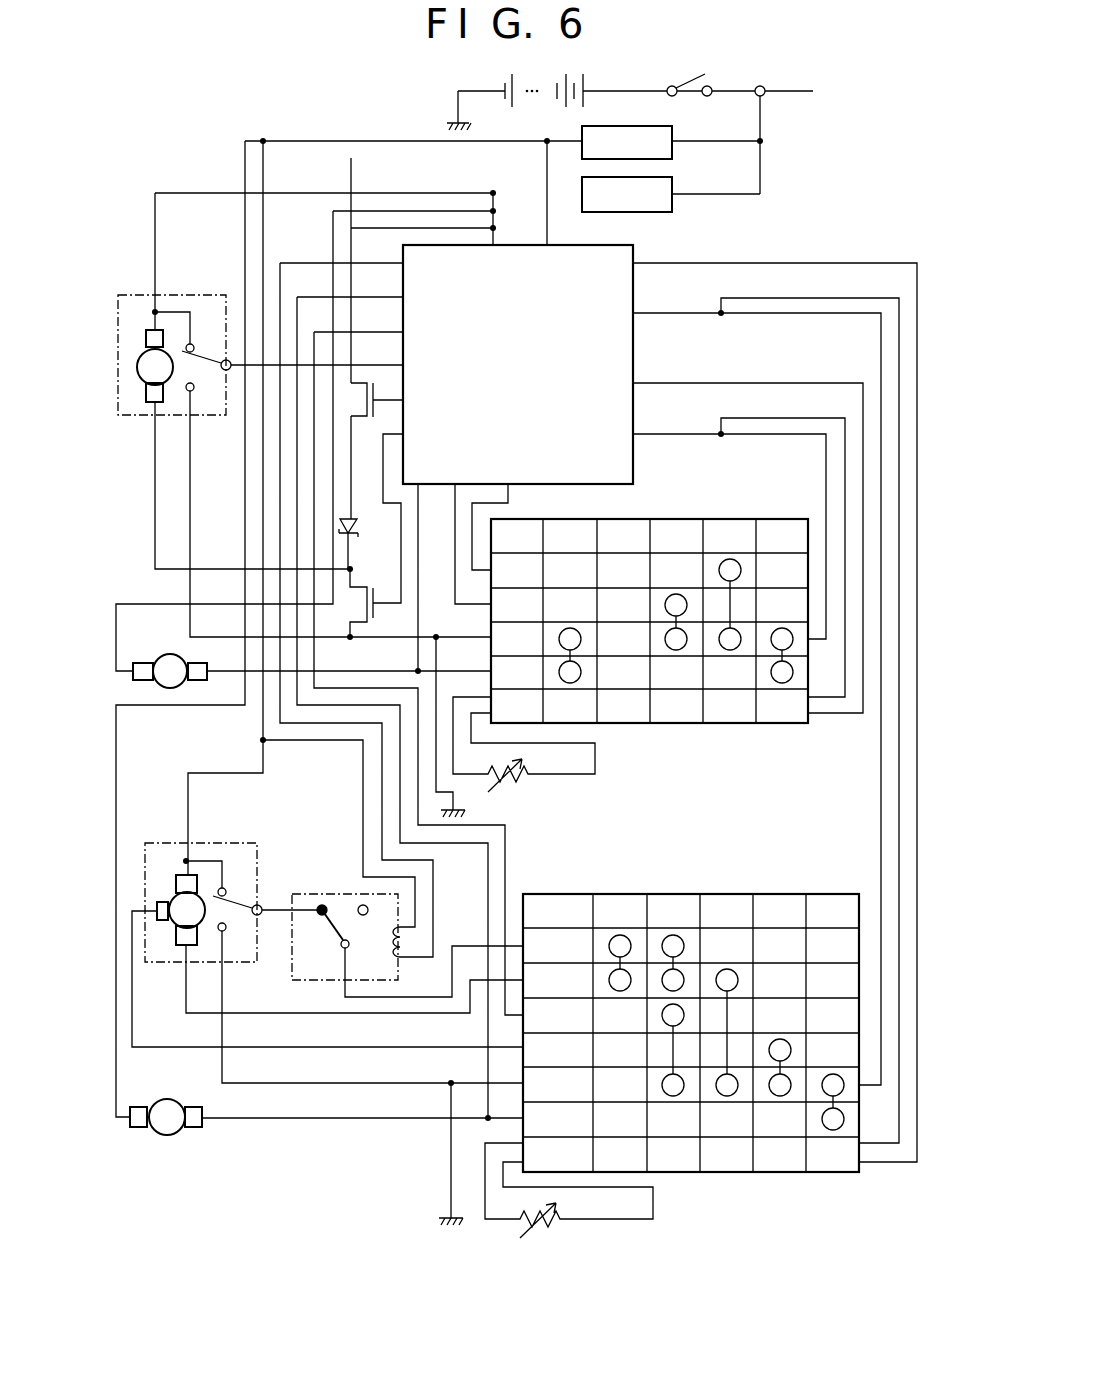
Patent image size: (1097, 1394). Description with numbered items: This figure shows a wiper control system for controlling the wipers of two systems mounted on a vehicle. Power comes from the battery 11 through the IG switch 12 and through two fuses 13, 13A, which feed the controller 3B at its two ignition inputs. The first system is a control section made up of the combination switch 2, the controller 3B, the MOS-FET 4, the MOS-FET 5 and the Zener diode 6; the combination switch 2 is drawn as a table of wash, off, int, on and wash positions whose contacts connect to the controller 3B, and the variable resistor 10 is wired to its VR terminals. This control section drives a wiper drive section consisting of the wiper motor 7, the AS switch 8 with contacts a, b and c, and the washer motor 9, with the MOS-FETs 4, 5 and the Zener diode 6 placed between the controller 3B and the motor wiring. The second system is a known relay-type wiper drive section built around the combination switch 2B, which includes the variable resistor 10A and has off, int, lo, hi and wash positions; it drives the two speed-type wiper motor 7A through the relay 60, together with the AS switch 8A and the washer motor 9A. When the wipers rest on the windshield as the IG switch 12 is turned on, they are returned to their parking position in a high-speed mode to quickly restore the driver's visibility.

The combination switch 2 is at (740, 519).
The combination switch 2B is at (790, 894).
The controller 3B is at (583, 245).
The MOS-FET 4 is at (377, 611).
The MOS-FET 5 is at (361, 421).
The Zener diode 6 is at (360, 525).
The wiper motor 7 is at (138, 353).
The two speed-type wiper motor 7A is at (171, 900).
The AS switch 8 is at (204, 350).
The AS switch 8A is at (236, 896).
The washer motor 9 is at (167, 655).
The washer motor 9A is at (173, 1098).
The variable resistor 10 is at (507, 779).
The variable resistor 10A is at (561, 1205).
The battery 11 is at (570, 108).
The IG switch 12 is at (707, 97).
The fuse 13 is at (655, 212).
The fuse 13A is at (617, 126).
The relay 60 is at (346, 892).